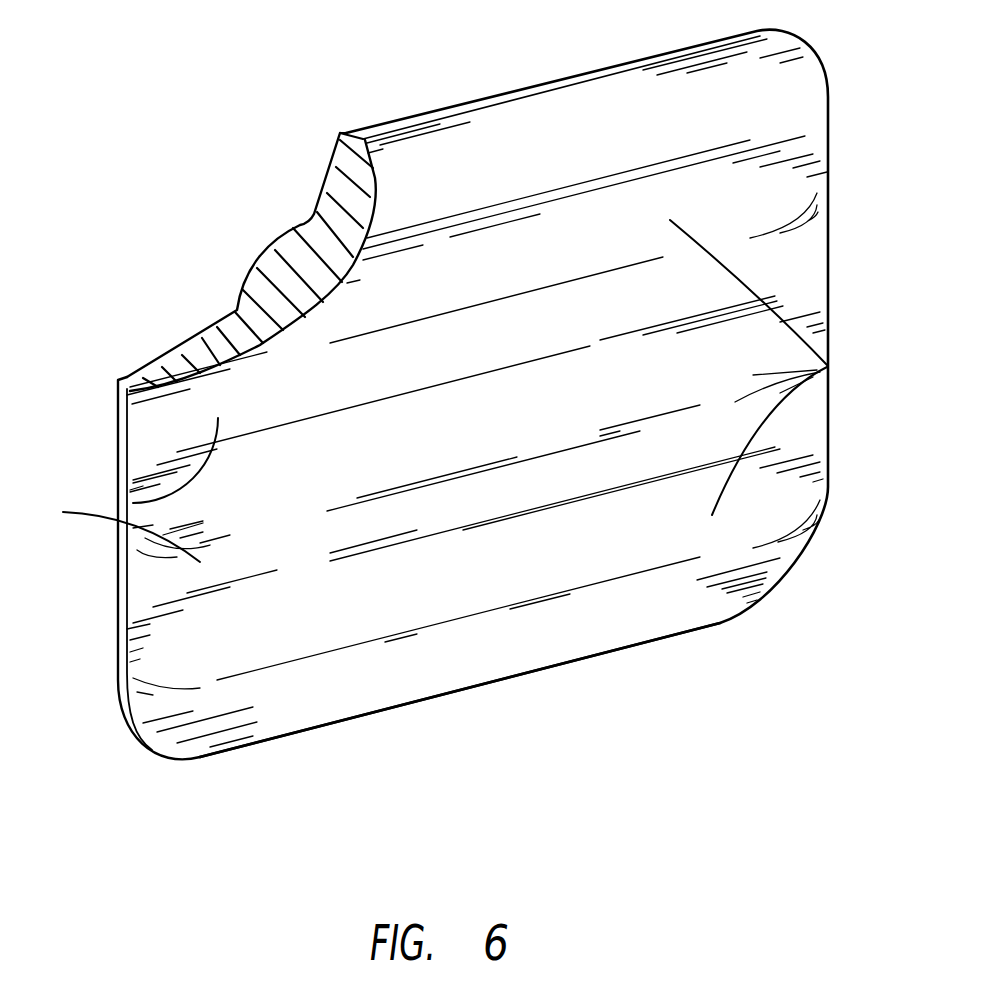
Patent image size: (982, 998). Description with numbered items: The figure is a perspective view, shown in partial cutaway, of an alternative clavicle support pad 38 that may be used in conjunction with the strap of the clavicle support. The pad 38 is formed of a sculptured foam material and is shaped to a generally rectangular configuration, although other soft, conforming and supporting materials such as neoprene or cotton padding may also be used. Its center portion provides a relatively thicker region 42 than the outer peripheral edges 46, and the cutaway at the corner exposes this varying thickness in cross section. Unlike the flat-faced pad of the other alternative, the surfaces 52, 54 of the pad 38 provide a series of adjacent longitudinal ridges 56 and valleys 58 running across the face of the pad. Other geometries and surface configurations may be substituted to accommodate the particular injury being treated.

The alternative clavicle support pad 38 is at (840, 77).
The relatively thicker region 42 is at (345, 192).
The outer peripheral edges 46 is at (408, 710).
The surface 52 is at (813, 255).
The surface 54 is at (237, 310).
The longitudinal ridges 56 is at (838, 370).
The valleys 58 is at (130, 502).